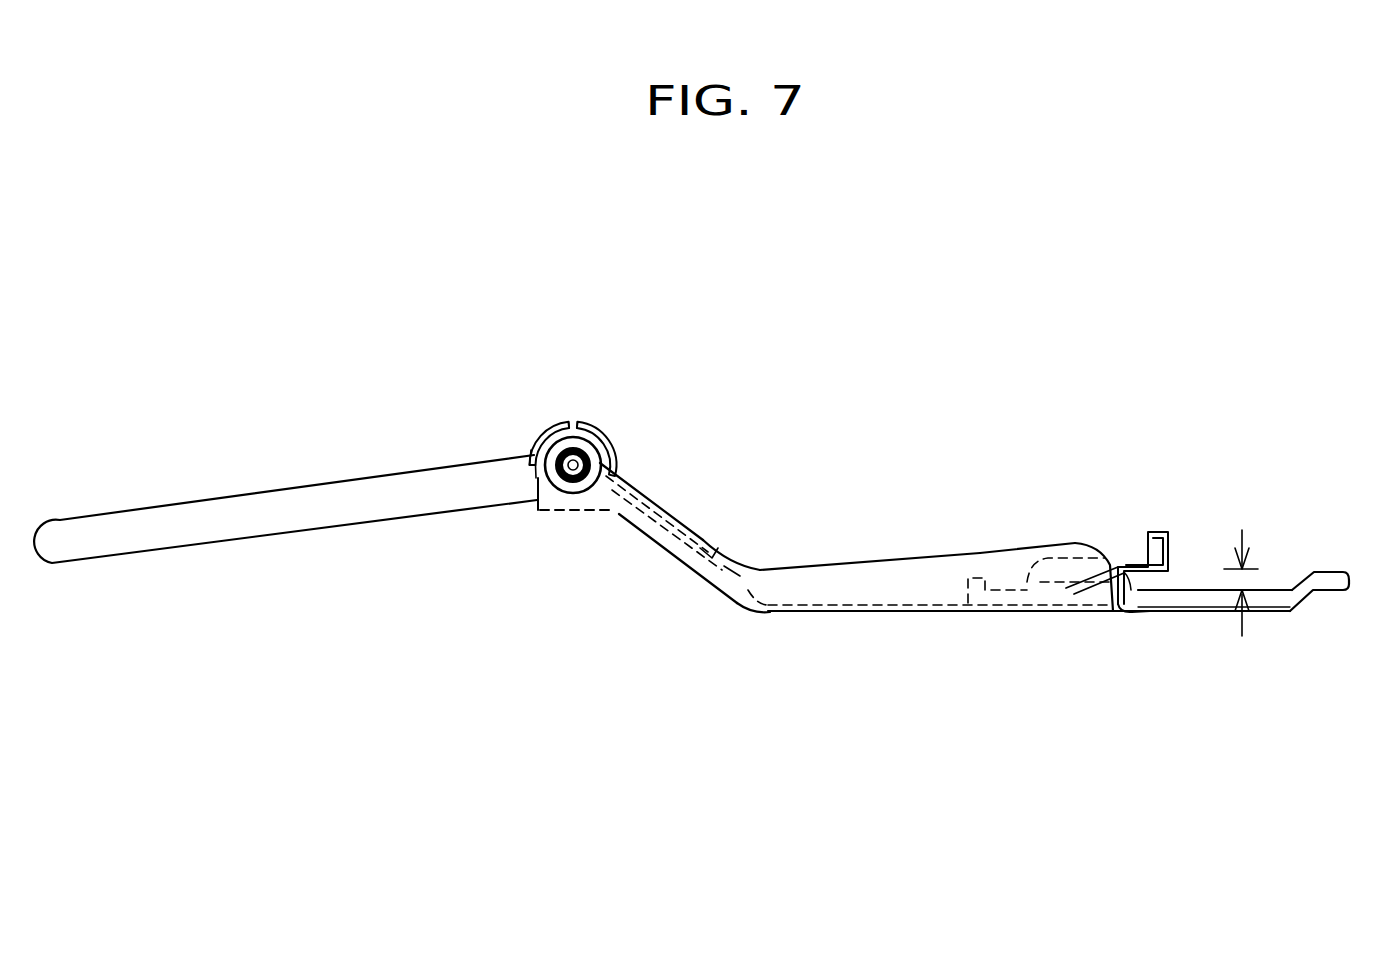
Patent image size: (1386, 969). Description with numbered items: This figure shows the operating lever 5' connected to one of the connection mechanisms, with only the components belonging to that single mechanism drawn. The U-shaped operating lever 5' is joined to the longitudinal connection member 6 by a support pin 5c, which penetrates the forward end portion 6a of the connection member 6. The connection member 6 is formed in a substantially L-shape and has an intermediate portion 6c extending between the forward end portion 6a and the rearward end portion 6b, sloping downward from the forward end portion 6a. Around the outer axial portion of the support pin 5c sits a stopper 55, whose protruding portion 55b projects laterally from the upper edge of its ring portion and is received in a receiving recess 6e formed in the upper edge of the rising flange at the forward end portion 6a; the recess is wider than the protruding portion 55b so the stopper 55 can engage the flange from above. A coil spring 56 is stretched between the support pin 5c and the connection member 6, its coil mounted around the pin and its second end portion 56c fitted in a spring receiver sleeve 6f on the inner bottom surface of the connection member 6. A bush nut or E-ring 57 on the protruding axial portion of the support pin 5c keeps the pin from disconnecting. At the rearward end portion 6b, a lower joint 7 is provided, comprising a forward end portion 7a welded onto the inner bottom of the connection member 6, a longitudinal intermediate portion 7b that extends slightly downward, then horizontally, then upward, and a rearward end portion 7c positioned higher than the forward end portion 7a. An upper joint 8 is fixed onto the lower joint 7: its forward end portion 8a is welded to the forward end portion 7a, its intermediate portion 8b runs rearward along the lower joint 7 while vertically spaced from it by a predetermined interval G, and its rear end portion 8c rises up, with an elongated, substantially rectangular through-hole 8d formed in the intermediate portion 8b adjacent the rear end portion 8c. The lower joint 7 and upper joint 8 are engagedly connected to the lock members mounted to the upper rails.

The operating lever 5' is at (285, 456).
The support pin 5c is at (577, 483).
The stopper 55 is at (584, 423).
The protruding portion 55b is at (618, 430).
The coil spring 56 is at (618, 506).
The second end portion 56c is at (757, 615).
The bush nut or E-ring 57 is at (530, 513).
The longitudinal connection member 6 is at (797, 560).
The forward end portion 6a is at (528, 442).
The rearward end portion 6b is at (1114, 613).
The intermediate portion 6c is at (924, 570).
The receiving recess 6e is at (571, 426).
The spring receiver sleeve 6f is at (703, 532).
The lower joint 7 is at (1305, 608).
The forward end portion 7a is at (938, 612).
The longitudinal intermediate portion 7b is at (1208, 613).
The rearward end portion 7c is at (1326, 558).
The upper joint 8 is at (1124, 556).
The forward end portion 8a is at (1068, 555).
The intermediate portion 8b is at (1148, 614).
The rear end portion 8c is at (1163, 532).
The elongated through-hole 8d is at (1140, 556).
The predetermined interval G is at (1241, 610).